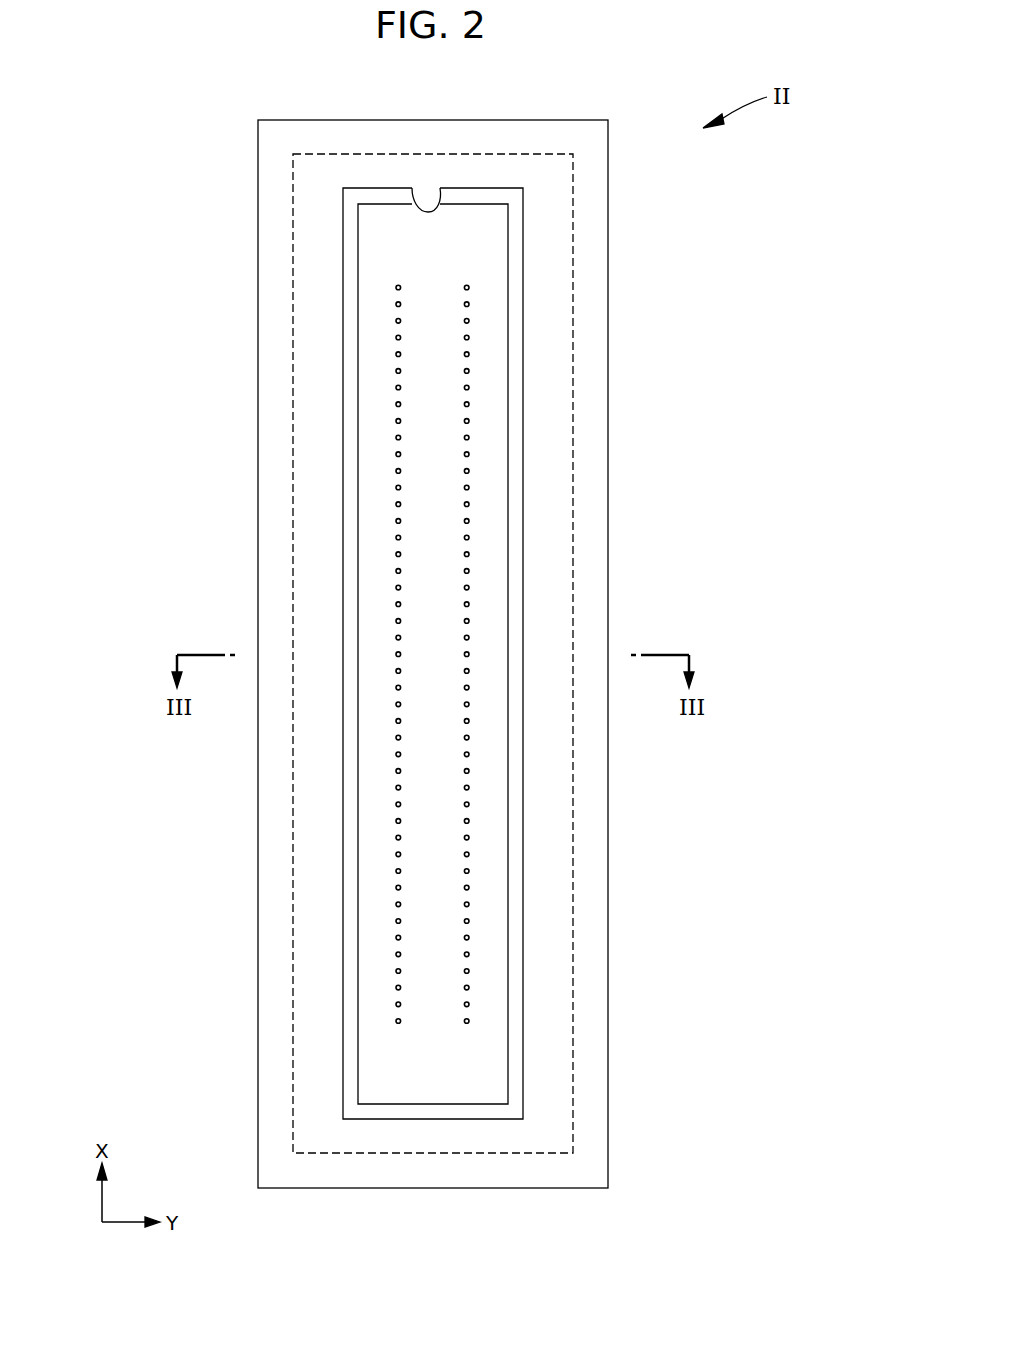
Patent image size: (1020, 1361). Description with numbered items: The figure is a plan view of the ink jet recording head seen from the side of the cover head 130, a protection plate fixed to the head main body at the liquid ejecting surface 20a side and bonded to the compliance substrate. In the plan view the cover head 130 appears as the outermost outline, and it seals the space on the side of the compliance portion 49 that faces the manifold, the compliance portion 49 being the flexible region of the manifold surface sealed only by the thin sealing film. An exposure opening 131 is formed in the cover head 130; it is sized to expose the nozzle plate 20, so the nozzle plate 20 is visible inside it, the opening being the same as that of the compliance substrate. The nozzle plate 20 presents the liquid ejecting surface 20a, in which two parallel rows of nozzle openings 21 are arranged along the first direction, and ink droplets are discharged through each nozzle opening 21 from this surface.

The cover head 130 is at (608, 270).
The exposure opening 131 is at (440, 188).
The compliance portion 49 is at (573, 796).
The nozzle plate 20 is at (508, 237).
The liquid ejecting surface 20a is at (493, 577).
The nozzle opening 21 is at (467, 454).